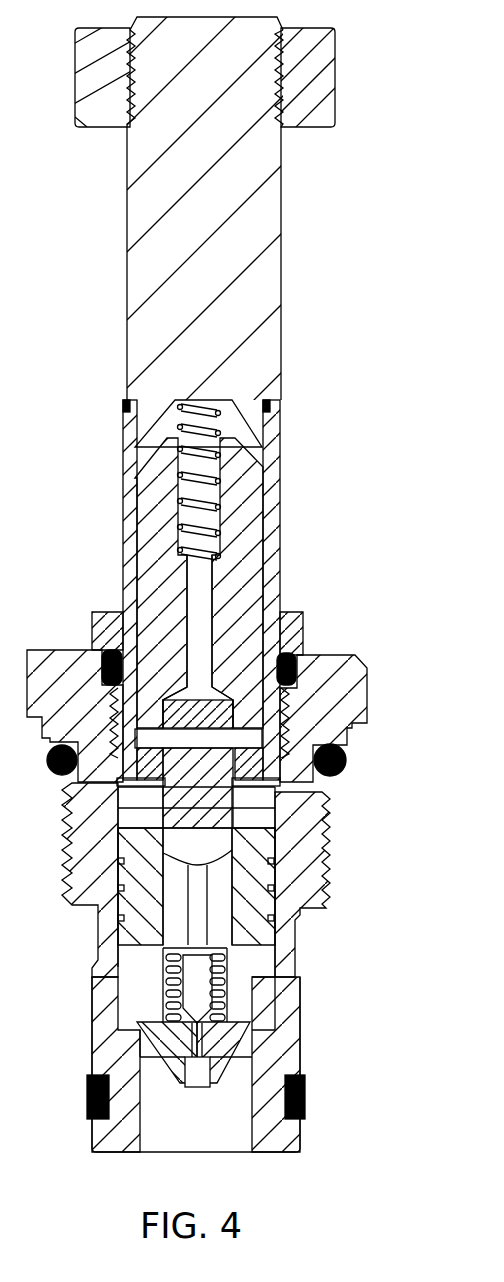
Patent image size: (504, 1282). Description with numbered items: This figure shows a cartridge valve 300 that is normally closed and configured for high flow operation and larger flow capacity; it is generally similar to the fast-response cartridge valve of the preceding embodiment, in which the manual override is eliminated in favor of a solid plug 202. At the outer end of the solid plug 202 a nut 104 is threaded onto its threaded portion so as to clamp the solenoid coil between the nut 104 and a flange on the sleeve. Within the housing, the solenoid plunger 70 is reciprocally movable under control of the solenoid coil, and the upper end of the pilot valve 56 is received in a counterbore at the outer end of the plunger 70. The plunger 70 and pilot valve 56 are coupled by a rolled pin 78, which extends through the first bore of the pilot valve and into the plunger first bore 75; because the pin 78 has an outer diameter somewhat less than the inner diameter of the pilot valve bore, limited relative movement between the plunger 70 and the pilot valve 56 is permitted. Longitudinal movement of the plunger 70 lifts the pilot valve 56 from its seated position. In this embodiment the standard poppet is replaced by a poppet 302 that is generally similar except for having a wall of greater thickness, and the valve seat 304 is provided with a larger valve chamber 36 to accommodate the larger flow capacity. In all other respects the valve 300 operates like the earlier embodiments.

The nut 104 is at (313, 95).
The solid plug 202 is at (253, 232).
The cartridge valve 300 is at (302, 326).
The solenoid plunger 70 is at (238, 568).
The plunger first bore 75 is at (275, 775).
The valve seat 304 is at (345, 712).
The rolled pin 78 is at (237, 738).
The poppet 302 is at (255, 932).
The pilot valve 56 is at (197, 988).
The valve chamber 36 is at (120, 962).